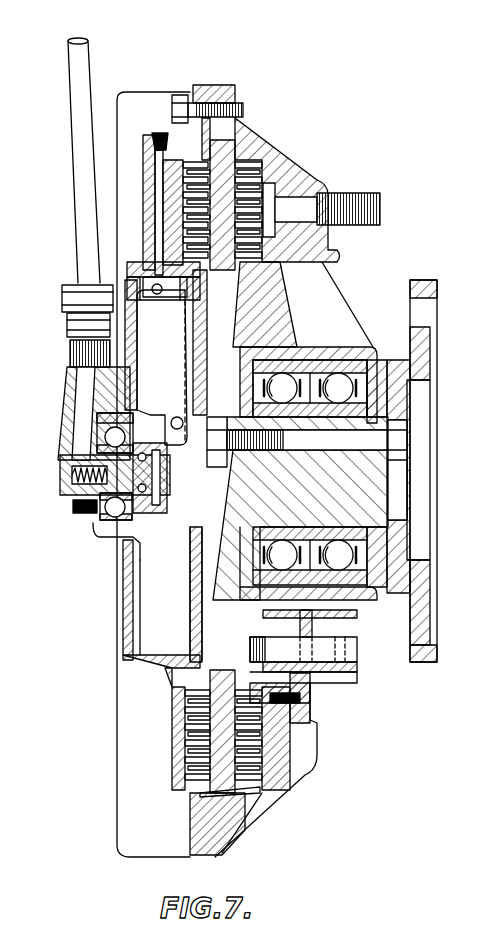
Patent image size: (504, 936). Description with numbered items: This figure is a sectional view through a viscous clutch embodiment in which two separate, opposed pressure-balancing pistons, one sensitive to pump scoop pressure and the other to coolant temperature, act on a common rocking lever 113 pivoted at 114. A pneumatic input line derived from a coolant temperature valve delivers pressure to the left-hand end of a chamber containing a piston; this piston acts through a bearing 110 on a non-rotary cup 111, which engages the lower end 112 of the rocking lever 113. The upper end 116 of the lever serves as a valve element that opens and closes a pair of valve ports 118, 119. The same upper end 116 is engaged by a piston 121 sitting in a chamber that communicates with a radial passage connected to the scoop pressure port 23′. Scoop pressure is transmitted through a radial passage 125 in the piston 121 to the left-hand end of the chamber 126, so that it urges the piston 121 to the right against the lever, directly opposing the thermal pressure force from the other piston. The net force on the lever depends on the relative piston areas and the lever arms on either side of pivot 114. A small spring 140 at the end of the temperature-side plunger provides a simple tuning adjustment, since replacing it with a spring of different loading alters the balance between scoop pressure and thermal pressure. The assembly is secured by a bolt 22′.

The bolt 22′ is at (200, 157).
The scoop pressure port 23′ is at (167, 158).
The piston 121 is at (148, 283).
The radial passage 125 is at (125, 273).
The chamber 126 is at (167, 303).
The rocking lever 113 is at (182, 368).
The pivot 114 is at (170, 420).
The small spring 140 is at (68, 468).
The bearing 110 is at (178, 497).
The non-rotary cup 111 is at (187, 520).
The lower end of rocking lever 112 is at (196, 540).
The valve port 118 is at (205, 293).
The valve port 119 is at (205, 303).
The upper end of rocking lever 116 is at (200, 330).